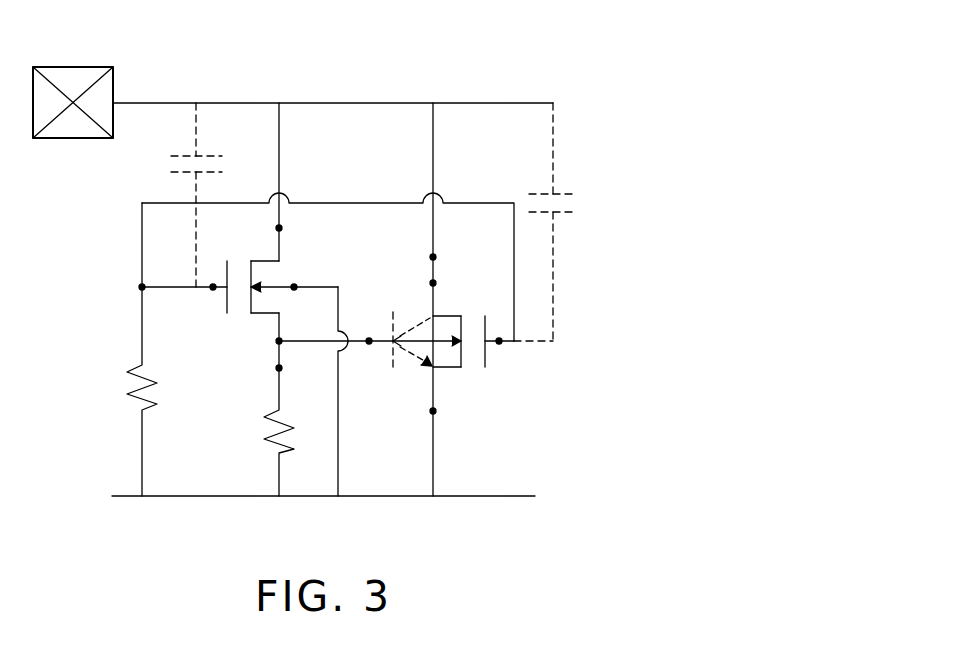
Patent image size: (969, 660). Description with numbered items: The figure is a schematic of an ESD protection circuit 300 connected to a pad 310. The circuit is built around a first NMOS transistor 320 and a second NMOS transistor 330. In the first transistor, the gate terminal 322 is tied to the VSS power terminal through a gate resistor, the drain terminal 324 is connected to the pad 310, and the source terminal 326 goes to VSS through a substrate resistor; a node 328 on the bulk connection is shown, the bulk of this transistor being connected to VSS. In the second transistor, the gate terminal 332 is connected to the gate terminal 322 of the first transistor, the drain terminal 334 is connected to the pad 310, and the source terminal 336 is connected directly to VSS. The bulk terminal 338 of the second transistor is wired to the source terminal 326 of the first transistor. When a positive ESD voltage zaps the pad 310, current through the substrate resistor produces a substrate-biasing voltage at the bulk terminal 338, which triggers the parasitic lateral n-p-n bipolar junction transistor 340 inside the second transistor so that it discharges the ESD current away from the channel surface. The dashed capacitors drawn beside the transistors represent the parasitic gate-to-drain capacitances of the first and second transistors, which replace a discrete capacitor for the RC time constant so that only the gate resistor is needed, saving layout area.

The ESD protection circuit 300 is at (605, 94).
The pad 310 is at (113, 78).
The first NMOS transistor 320 is at (238, 260).
The gate terminal 322 is at (202, 306).
The drain terminal 324 is at (304, 231).
The source terminal 326 is at (303, 375).
The body node of first transistor 328 is at (310, 304).
The second NMOS transistor 330 is at (483, 297).
The gate terminal 332 is at (511, 351).
The drain terminal 334 is at (458, 258).
The source terminal 336 is at (458, 417).
The bulk terminal 338 is at (371, 354).
The parasitic lateral n-p-n bipolar junction transistor 340 is at (400, 287).